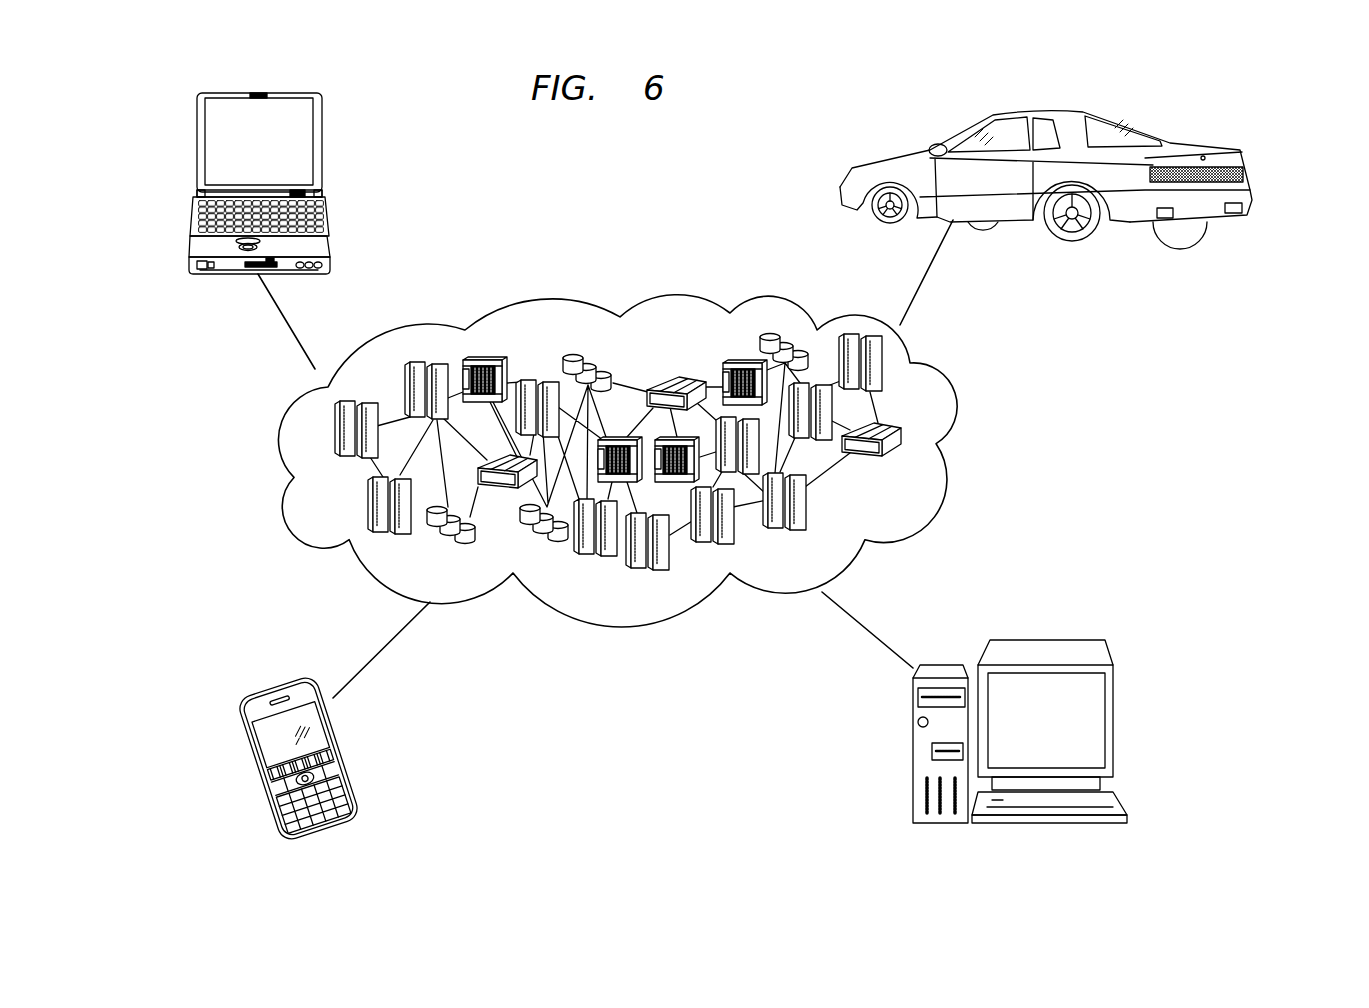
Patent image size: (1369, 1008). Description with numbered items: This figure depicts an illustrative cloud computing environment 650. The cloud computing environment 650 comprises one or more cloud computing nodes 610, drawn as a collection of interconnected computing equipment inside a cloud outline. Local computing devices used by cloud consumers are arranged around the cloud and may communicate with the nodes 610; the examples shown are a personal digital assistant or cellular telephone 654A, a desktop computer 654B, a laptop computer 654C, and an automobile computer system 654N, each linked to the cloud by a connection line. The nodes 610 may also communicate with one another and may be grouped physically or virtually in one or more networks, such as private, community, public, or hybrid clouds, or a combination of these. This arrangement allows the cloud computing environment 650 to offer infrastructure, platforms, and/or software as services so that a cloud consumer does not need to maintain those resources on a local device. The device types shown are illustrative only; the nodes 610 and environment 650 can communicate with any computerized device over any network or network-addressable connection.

The cloud computing environment 650 is at (952, 388).
The cloud computing nodes 610 is at (907, 463).
The personal digital assistant (PDA) or cellular telephone 654A is at (242, 747).
The desktop computer 654B is at (1050, 640).
The laptop computer 654C is at (197, 136).
The automobile computer system 654N is at (1215, 150).